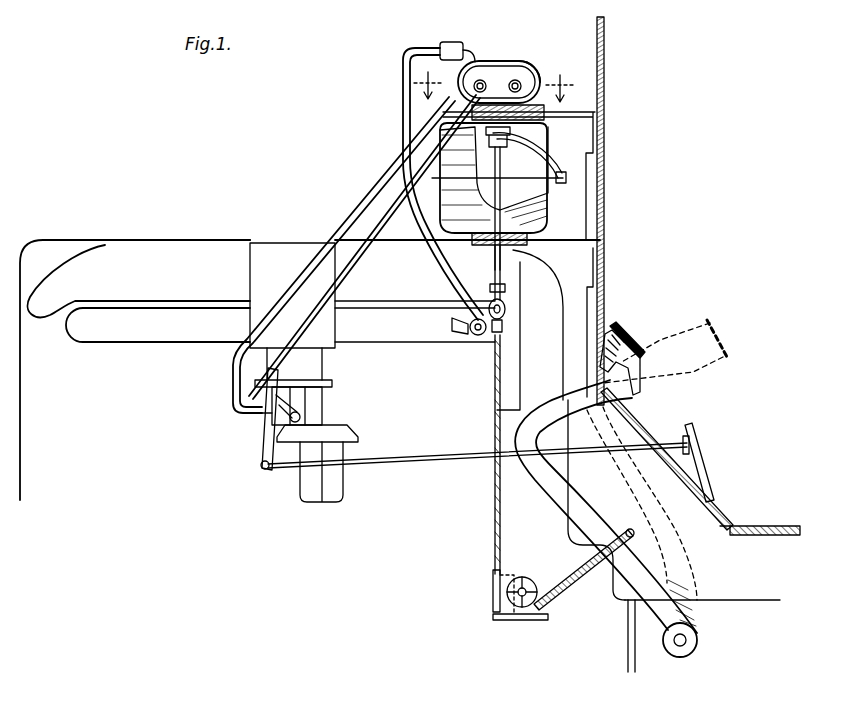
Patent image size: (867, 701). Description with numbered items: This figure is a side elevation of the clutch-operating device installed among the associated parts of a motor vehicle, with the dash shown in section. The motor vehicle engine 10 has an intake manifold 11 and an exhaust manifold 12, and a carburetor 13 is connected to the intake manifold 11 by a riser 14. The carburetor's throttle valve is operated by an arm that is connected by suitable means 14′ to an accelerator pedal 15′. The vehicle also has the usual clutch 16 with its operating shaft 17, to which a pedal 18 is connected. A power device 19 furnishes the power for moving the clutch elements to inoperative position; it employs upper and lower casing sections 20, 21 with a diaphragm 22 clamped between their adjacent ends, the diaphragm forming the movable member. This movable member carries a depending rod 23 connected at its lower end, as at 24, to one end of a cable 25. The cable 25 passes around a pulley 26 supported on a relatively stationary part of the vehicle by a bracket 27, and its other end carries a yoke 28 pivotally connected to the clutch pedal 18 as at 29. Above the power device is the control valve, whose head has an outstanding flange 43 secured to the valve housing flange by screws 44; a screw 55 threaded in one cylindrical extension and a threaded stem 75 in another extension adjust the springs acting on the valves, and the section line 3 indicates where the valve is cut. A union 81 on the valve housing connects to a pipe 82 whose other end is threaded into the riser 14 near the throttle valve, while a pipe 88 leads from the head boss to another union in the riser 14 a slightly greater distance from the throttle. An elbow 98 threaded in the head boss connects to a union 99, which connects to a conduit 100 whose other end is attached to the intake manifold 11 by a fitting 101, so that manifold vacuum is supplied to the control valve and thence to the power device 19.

The section line 3- 3 is at (492, 83).
The motor vehicle engine 10 is at (80, 240).
The intake manifold 11 is at (140, 344).
The exhaust manifold 12 is at (185, 250).
The carburetor 13 is at (330, 496).
The riser 14 is at (323, 366).
The suitable means 14′ is at (448, 455).
The accelerator pedal 15′ is at (702, 452).
The clutch 16 is at (749, 600).
The operating shaft 17 is at (699, 638).
The pedal 18 is at (633, 345).
The power device 19 is at (552, 207).
The upper casing section 20 is at (548, 124).
The lower casing section 21 is at (550, 222).
The diaphragm 22 is at (545, 163).
The depending rod 23 is at (492, 267).
The connection 24 is at (505, 314).
The cable 25 is at (490, 422).
The pulley 26 is at (526, 572).
The bracket 27 is at (493, 604).
The yoke 28 is at (607, 562).
The pivotal connection 29 is at (636, 532).
The outstanding flange 43 is at (542, 67).
The screws 44 is at (502, 65).
The screw 55 is at (520, 78).
The threaded stem 75 is at (463, 103).
The union 81 is at (470, 84).
The pipe 82 is at (343, 220).
The pipe 88 is at (350, 250).
The elbow 98 is at (476, 57).
The union 99 is at (450, 43).
The conduit 100 is at (402, 60).
The fitting 101 is at (470, 338).